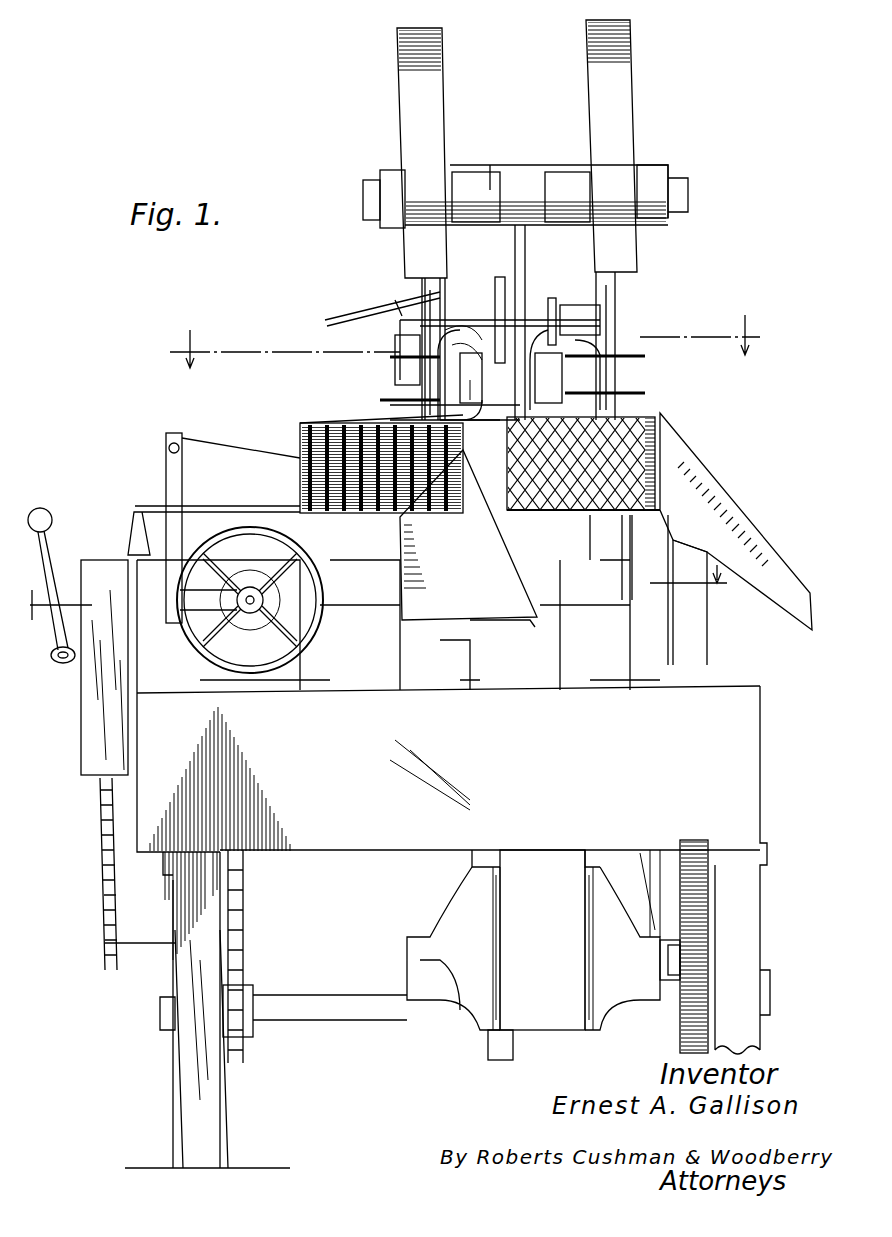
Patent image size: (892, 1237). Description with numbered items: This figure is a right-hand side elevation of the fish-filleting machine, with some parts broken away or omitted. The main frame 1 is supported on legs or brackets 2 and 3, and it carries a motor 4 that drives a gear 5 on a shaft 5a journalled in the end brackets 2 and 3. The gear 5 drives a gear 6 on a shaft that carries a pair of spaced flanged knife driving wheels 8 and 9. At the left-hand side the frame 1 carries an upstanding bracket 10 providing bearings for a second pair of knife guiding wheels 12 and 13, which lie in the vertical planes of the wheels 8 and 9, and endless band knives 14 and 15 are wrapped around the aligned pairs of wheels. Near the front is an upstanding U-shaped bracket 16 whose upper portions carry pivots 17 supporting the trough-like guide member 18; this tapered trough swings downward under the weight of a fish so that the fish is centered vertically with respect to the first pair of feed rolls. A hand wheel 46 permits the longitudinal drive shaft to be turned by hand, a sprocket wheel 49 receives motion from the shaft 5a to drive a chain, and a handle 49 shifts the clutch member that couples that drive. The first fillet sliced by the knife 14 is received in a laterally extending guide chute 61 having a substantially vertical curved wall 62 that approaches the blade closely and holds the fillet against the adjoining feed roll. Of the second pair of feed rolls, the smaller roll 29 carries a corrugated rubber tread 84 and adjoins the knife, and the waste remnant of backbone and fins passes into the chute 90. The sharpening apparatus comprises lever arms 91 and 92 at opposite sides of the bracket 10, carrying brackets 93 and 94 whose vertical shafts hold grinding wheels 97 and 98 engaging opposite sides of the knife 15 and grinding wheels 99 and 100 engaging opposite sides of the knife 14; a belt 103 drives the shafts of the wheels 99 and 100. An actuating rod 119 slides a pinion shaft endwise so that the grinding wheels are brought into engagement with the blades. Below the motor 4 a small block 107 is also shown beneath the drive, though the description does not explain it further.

The main frame 1 is at (150, 800).
The leg or bracket 2 is at (195, 1050).
The leg or bracket 3 is at (170, 352).
The motor 4 is at (565, 1020).
The gear 5 is at (680, 1035).
The shaft 5a is at (365, 1010).
The gear 6 is at (690, 840).
The flanged knife driving wheel 8 is at (482, 850).
The flanged knife driving wheel 9 is at (660, 850).
The upstanding bracket 10 is at (522, 270).
The knife guiding wheel 12 is at (442, 292).
The knife guiding wheel 13 is at (640, 288).
The endless band knife 14 is at (430, 297).
The endless band knife 15 is at (595, 285).
The upstanding U-shaped bracket 16 is at (166, 478).
The pivot 17 is at (174, 443).
The trough-like guide member 18 is at (255, 430).
The feed roll 29 is at (650, 412).
The hand wheel 46 is at (318, 618).
The sprocket wheel / handle 49 is at (50, 515).
The guide chute 61 is at (478, 615).
The curved wall 62 is at (500, 537).
The corrugated rubber tread 84 is at (655, 435).
The chute 90 is at (750, 532).
The lever arm 91 is at (555, 412).
The lever arm 92 is at (480, 410).
The bracket 93 is at (558, 385).
The bracket 94 is at (470, 368).
The grinding wheel 97 is at (648, 393).
The grinding wheel 98 is at (648, 356).
The grinding wheel 99 is at (380, 400).
The grinding wheel 100 is at (390, 357).
The belt 103 is at (400, 372).
The bearing block 107 is at (503, 1058).
The actuating rod 119 is at (360, 312).